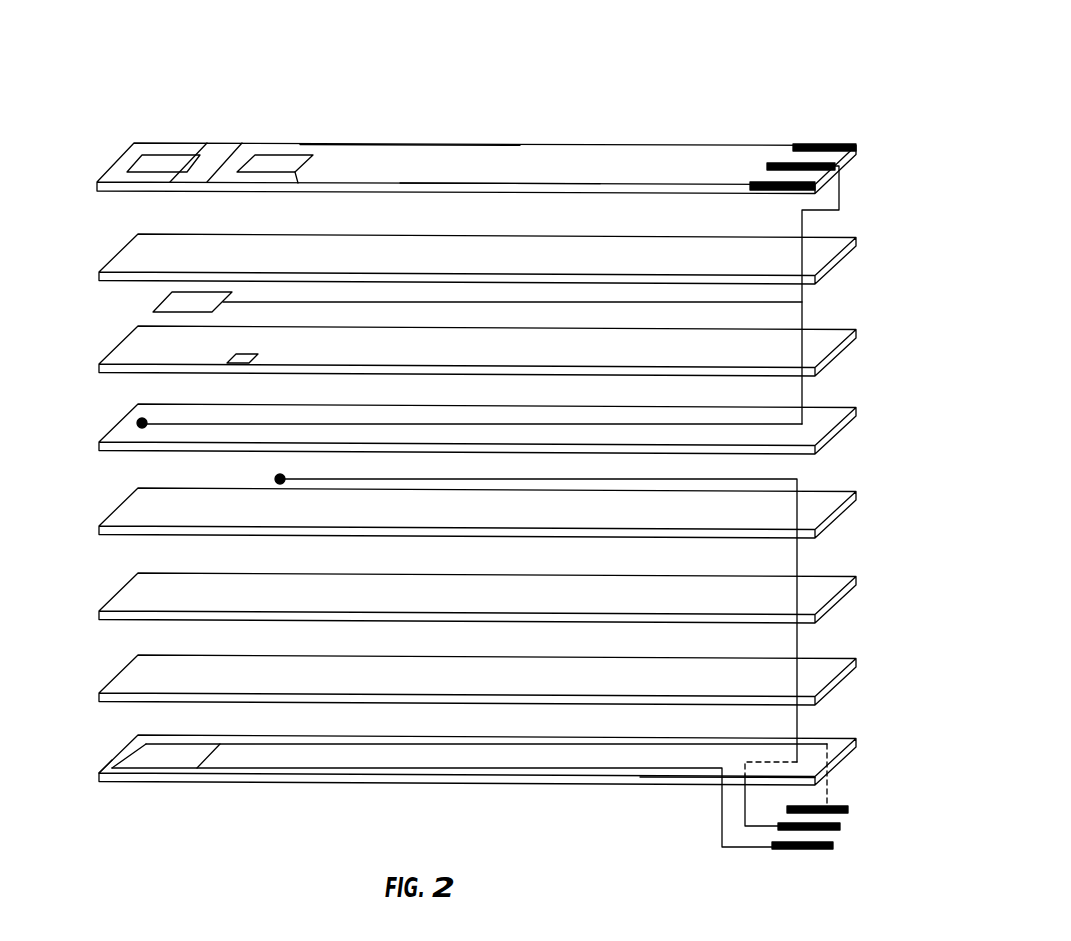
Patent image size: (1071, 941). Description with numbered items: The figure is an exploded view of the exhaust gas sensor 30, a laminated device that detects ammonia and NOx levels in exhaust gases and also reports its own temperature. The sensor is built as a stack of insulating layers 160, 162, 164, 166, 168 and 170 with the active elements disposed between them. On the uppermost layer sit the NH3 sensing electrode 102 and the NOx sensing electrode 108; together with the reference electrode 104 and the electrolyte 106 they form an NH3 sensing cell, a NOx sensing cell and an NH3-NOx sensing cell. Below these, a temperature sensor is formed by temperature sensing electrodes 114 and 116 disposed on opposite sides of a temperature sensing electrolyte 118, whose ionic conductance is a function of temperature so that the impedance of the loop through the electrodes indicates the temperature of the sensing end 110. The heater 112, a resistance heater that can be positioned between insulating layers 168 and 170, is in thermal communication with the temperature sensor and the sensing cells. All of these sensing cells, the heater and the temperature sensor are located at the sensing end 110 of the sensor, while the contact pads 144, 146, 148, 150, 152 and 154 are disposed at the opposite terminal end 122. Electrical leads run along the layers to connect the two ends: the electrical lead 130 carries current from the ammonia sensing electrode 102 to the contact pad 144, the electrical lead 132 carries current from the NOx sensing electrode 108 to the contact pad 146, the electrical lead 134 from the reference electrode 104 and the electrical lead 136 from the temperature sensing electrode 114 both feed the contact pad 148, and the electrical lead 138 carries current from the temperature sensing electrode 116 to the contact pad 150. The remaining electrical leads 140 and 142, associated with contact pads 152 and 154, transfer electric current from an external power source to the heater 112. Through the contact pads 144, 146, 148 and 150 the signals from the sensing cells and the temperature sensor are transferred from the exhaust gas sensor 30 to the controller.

The exhaust gas sensor 30 is at (473, 78).
The electrical lead 130 is at (575, 146).
The insulating layer 160 is at (402, 163).
The electrical lead 132 is at (541, 186).
The NH3 sensing electrode 102 is at (155, 162).
The NOx sensing electrode 108 is at (278, 160).
The contact pad 144 is at (825, 143).
The contact pad 146 is at (763, 189).
The contact pad 148 is at (852, 159).
The electrolyte 106 is at (118, 260).
The reference electrode 104 is at (150, 303).
The electrical lead 134 is at (525, 303).
The insulating layer 162 is at (117, 352).
The temperature sensing electrode 114 is at (138, 421).
The temperature sensing electrolyte 118 is at (100, 443).
The electrical lead 136 is at (488, 423).
The temperature sensing electrode 116 is at (276, 478).
The electrical lead 138 is at (493, 480).
The insulating layer 164 is at (115, 515).
The insulating layer 166 is at (115, 590).
The insulating layer 168 is at (113, 676).
The sensing end 110 is at (165, 817).
The heater 112 is at (101, 774).
The insulating layer 170 is at (140, 758).
The electrical lead 140 is at (388, 743).
The electrical lead 142 is at (383, 773).
The terminal end 122 is at (677, 792).
The contact pad 150 is at (840, 826).
The contact pad 152 is at (848, 806).
The contact pad 154 is at (833, 845).